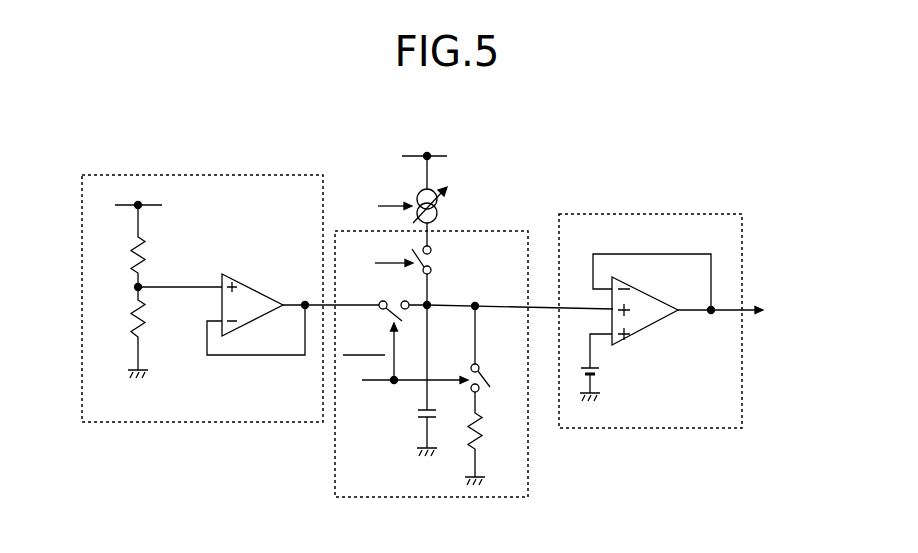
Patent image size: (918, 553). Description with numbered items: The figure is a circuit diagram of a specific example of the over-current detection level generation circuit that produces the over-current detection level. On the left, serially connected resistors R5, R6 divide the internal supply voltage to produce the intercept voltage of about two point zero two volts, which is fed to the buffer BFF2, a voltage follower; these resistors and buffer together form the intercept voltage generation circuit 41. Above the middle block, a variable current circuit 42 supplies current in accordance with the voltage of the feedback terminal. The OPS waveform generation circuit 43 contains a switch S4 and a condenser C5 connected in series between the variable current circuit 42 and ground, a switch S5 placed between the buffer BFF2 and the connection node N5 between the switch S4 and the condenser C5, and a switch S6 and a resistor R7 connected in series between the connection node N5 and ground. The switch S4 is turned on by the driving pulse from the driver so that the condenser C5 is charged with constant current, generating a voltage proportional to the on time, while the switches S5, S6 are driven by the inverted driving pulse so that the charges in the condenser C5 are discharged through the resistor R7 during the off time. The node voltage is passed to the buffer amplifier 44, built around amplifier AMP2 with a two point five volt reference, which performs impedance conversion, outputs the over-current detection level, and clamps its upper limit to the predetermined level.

The intercept voltage generation circuit 41 is at (225, 422).
The variable current circuit 42 is at (437, 204).
The OPS waveform generation circuit 43 is at (530, 473).
The buffer amplifier 44 is at (655, 430).
The resistor R5 is at (156, 246).
The resistor R6 is at (156, 328).
The buffer BFF2 is at (255, 284).
The switch S4 is at (408, 274).
The switch S5 is at (403, 329).
The switch S6 is at (492, 349).
The connection node N5 is at (430, 300).
The condenser C5 is at (417, 380).
The resistor R7 is at (490, 438).
The amplifier AMP2 is at (650, 330).